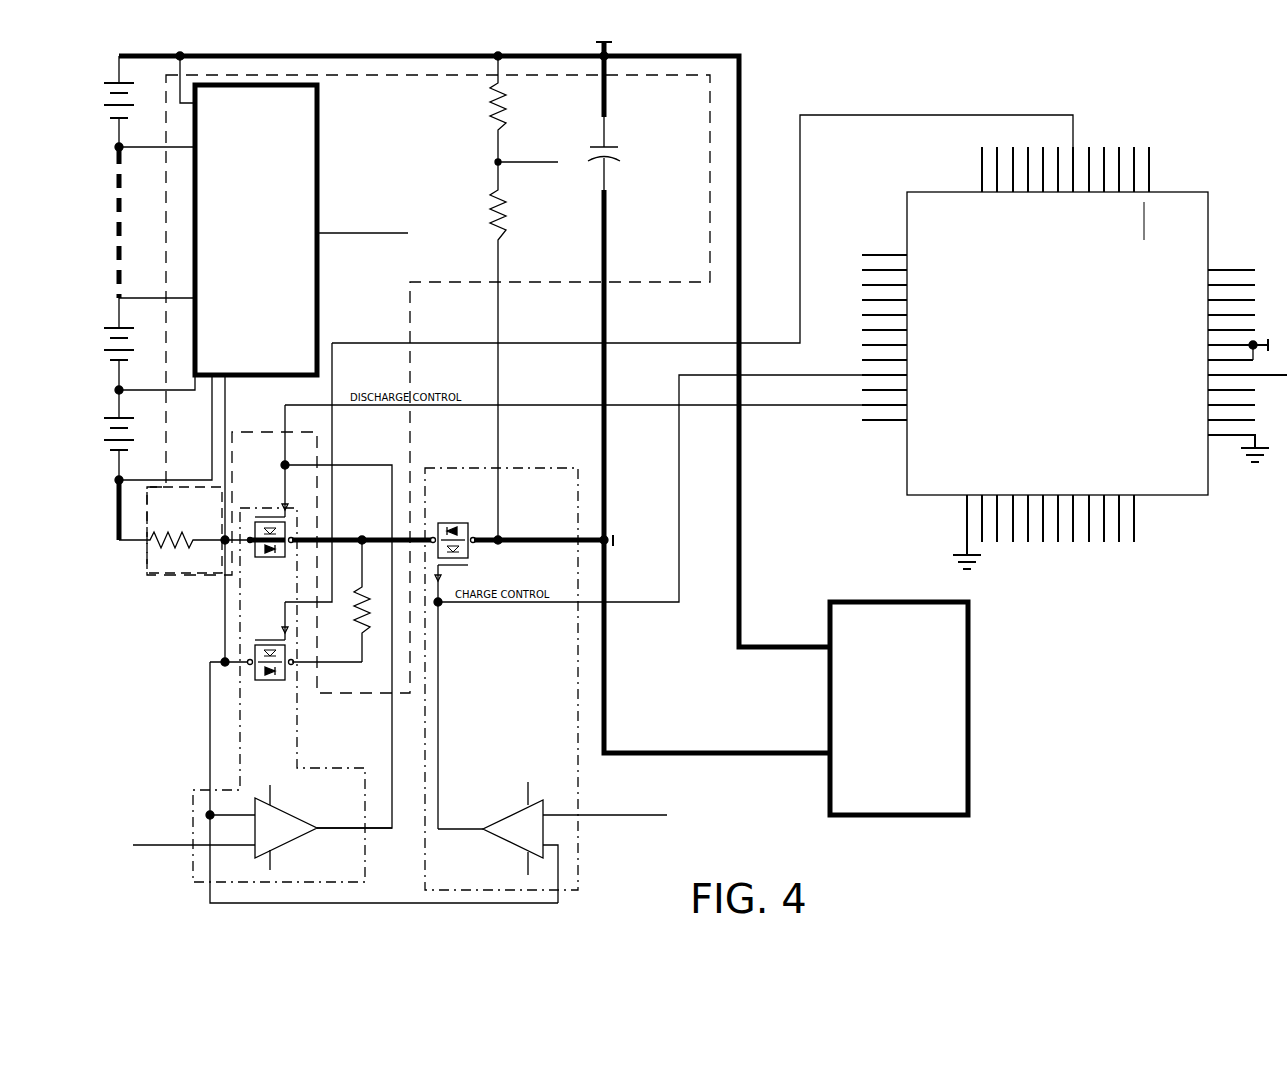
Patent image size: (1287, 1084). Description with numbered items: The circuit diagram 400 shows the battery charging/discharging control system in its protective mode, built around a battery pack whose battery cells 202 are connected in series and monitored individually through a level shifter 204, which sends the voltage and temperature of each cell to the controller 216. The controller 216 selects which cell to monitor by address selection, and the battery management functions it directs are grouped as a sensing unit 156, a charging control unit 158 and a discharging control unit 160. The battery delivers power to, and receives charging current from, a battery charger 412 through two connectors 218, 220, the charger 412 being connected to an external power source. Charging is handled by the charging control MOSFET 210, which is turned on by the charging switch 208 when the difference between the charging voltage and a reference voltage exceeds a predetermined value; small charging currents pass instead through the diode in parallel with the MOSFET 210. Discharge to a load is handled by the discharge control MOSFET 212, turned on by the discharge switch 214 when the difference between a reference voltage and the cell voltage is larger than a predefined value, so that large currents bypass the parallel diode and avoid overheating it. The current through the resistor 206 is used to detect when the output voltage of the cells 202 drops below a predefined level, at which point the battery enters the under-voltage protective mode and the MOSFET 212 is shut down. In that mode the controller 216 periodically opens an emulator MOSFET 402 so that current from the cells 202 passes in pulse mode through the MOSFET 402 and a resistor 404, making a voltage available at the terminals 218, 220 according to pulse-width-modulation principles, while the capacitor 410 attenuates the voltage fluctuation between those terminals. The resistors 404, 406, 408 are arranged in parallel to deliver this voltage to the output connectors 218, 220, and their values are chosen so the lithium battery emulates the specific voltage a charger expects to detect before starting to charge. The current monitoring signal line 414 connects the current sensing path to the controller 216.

The circuit diagram 400 is at (1170, 90).
The sensing unit 156 is at (712, 128).
The charging control unit 158 is at (193, 803).
The discharging control unit 160 is at (580, 845).
The battery cells 202 is at (133, 298).
The level shifter 204 is at (318, 187).
The resistor 206 is at (175, 530).
The charging switch 208 is at (262, 824).
The charging control MOSFET 210 is at (279, 643).
The discharge control MOSFET 212 is at (501, 679).
The discharge switch 214 is at (552, 836).
The controller 216 is at (1116, 366).
The connector 218 is at (474, 380).
The connector 220 is at (451, 531).
The emulator MOSFET 402 is at (286, 664).
The resistor 404 is at (351, 601).
The resistor 406 is at (480, 351).
The resistor 408 is at (500, 110).
The capacitor 410 is at (631, 153).
The battery charger 412 is at (970, 752).
The current monitor signal line LMON 414 is at (679, 358).